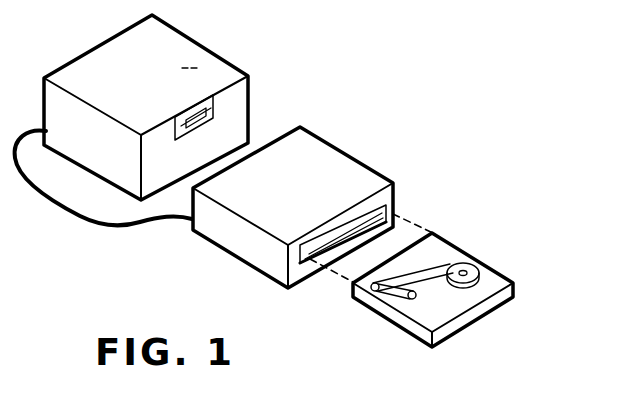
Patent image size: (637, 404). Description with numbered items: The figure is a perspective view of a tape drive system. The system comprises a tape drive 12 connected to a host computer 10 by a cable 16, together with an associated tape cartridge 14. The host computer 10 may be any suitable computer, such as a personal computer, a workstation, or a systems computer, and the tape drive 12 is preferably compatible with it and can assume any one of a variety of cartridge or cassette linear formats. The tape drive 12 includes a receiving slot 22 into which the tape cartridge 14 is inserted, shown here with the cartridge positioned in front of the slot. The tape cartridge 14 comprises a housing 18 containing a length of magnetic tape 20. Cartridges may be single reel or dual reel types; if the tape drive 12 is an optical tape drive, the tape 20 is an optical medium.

The host computer 10 is at (222, 44).
The tape drive 12 is at (365, 146).
The tape cartridge 14 is at (473, 243).
The cable 16 is at (84, 218).
The housing 18 is at (475, 312).
The magnetic tape 20 is at (428, 276).
The receiving slot 22 is at (371, 224).